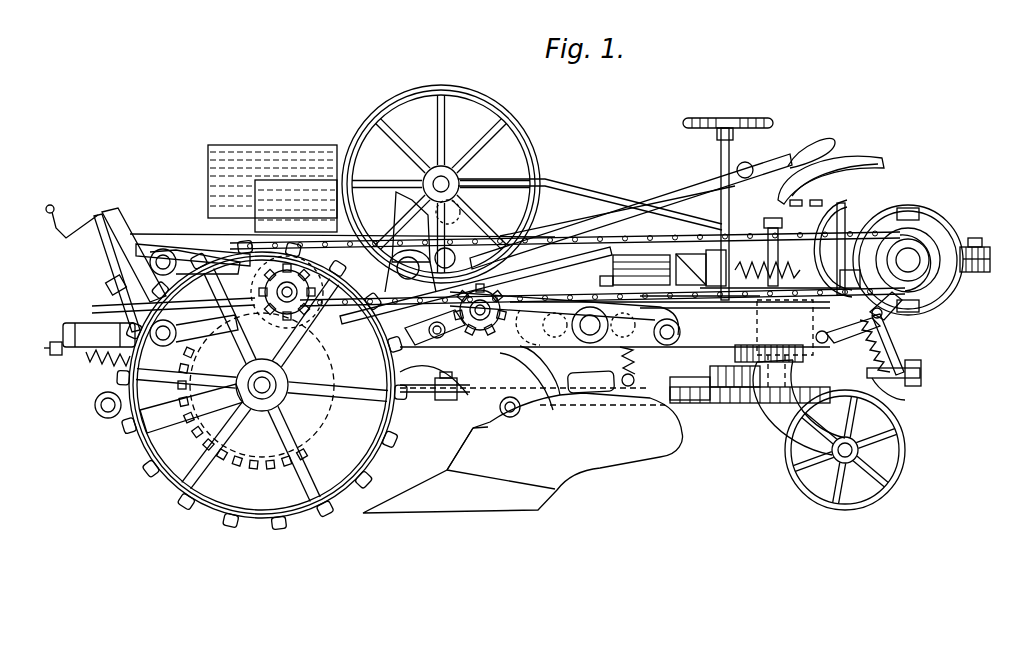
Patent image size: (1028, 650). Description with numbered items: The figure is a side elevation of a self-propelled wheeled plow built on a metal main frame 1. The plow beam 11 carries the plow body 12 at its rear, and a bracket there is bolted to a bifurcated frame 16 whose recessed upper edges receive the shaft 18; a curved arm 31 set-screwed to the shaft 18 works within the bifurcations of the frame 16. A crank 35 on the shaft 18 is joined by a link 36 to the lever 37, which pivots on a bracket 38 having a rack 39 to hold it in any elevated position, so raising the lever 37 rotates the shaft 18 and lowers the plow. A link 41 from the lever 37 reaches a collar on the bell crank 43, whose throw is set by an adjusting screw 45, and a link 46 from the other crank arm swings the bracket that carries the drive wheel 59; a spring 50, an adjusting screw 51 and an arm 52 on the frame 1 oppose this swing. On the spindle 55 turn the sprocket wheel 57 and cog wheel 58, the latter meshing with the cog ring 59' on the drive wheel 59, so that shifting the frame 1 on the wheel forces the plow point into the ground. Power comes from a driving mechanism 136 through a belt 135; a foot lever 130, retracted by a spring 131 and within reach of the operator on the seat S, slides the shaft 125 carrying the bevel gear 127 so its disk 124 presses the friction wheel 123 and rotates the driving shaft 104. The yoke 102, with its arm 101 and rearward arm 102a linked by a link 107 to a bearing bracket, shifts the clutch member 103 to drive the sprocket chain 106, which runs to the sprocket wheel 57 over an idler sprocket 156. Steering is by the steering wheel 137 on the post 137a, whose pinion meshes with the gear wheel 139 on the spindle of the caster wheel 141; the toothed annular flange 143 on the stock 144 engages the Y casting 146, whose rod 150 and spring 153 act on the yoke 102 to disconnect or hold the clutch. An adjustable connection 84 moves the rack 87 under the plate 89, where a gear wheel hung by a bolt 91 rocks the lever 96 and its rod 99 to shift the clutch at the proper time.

The main frame 1 is at (615, 324).
The plow beam 11 is at (532, 385).
The plow body 12 is at (522, 453).
The frame 16 is at (557, 378).
The shaft 18 is at (575, 326).
The curved arm 31 is at (455, 315).
The crank 35 is at (648, 338).
The link 36 is at (555, 284).
The lever 37 is at (652, 203).
The bracket 38 is at (476, 285).
The rack 39 is at (404, 206).
The link 41 is at (308, 240).
The bell crank 43 is at (118, 273).
The adjusting screw 45 is at (108, 255).
The link 46 is at (192, 418).
The spring 50 is at (112, 364).
The adjusting screw 51 is at (46, 349).
The arm 52 is at (106, 286).
The spindle 55 is at (244, 292).
The sprocket wheel 57 is at (236, 250).
The cog wheel 58 is at (150, 304).
The drive wheel 59 is at (253, 385).
The cog wheel or ring 59' is at (242, 391).
The adjustable connection 84 is at (435, 400).
The rack 87 is at (714, 404).
The plate 89 is at (688, 402).
The bolt 91 is at (752, 404).
The lever 96 is at (921, 374).
The rod 99 is at (904, 346).
The arm 101 is at (859, 317).
The yoke 102 is at (944, 238).
The rearwardly extending arm 102a is at (984, 250).
The clutch member 103 is at (916, 266).
The driving shaft 104 is at (920, 272).
The sprocket chain 106 is at (648, 241).
The link 107 is at (990, 262).
The friction wheel 123 is at (938, 312).
The disk 124 is at (852, 198).
The shaft 125 is at (678, 258).
The bevel gear 127 is at (779, 226).
The lever 130 is at (618, 272).
The spring 131 is at (785, 327).
The belt 135 is at (590, 192).
The driving mechanism 136 is at (315, 145).
The steering wheel 137 is at (767, 124).
The post 137a is at (720, 152).
The gear wheel 139 is at (718, 297).
The caster wheel 141 is at (906, 468).
The annular flange 143 is at (733, 355).
The stock 144 is at (799, 407).
The Y casting 146 is at (880, 376).
The rod 150 is at (789, 355).
The spring 153 is at (893, 334).
The idler sprocket 156 is at (478, 338).
The seat S is at (870, 170).